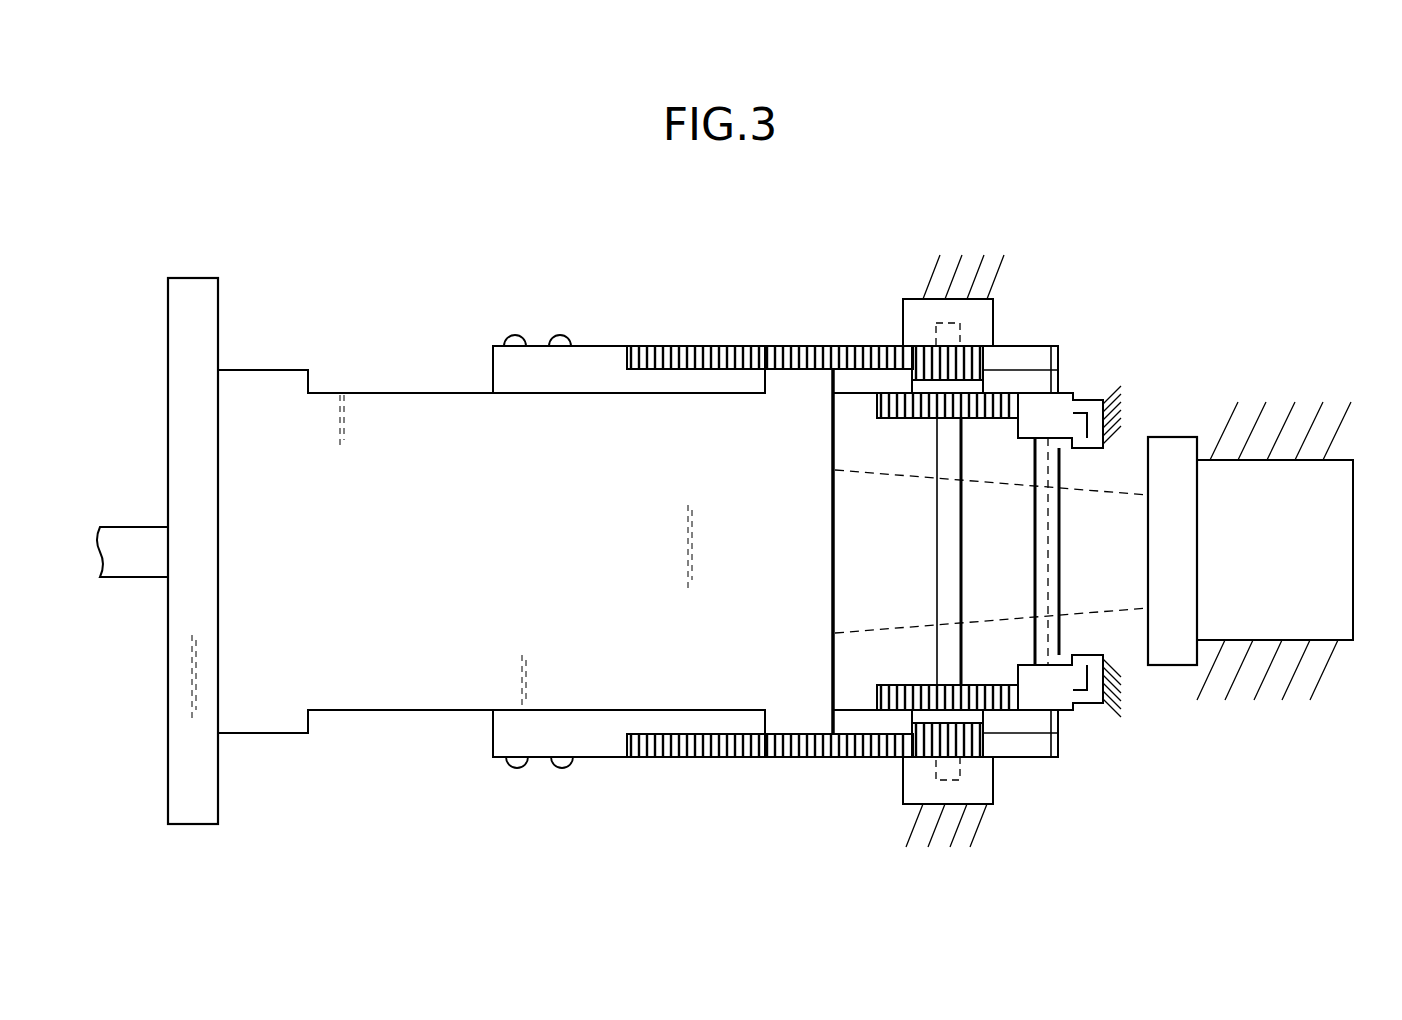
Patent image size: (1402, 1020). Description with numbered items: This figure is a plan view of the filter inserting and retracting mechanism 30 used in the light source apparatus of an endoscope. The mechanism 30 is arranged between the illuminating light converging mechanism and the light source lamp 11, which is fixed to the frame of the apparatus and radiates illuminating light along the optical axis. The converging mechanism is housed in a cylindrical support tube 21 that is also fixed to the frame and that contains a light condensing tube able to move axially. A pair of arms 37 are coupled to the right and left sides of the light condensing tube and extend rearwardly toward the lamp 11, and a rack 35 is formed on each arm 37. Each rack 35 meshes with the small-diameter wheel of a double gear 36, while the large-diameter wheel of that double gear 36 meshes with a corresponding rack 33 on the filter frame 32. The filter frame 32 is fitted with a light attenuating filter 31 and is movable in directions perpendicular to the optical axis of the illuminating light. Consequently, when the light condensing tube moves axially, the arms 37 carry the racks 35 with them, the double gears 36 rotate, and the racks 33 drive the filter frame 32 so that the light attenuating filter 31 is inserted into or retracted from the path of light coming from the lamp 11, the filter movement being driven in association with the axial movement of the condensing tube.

The lamp 11 is at (1279, 482).
The support tube 21 is at (268, 718).
The filter inserting and retracting mechanism 30 is at (1016, 301).
The light attenuating filter 31 is at (1046, 515).
The filter frame 32 is at (1065, 552).
The rack 33 is at (1040, 400).
The rack 35 is at (773, 346).
The double gear 36 is at (910, 383).
The arm 37 is at (597, 358).